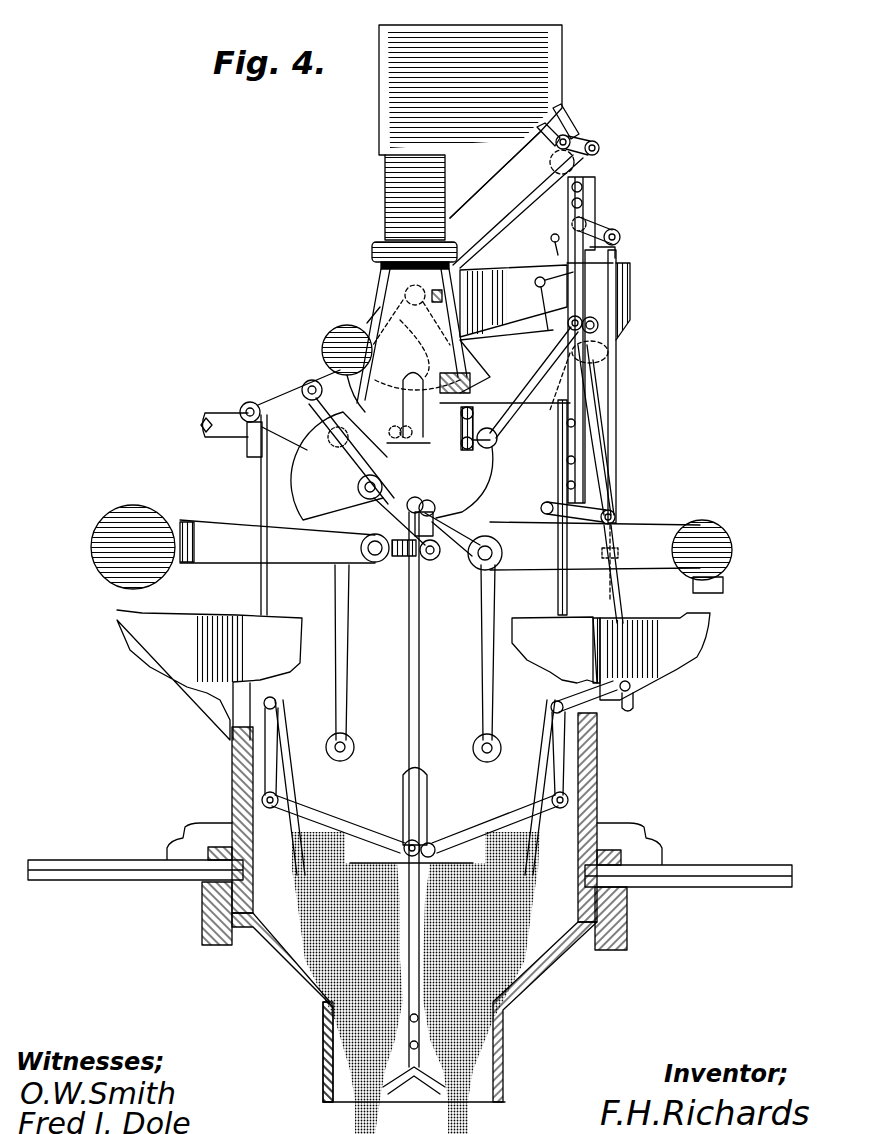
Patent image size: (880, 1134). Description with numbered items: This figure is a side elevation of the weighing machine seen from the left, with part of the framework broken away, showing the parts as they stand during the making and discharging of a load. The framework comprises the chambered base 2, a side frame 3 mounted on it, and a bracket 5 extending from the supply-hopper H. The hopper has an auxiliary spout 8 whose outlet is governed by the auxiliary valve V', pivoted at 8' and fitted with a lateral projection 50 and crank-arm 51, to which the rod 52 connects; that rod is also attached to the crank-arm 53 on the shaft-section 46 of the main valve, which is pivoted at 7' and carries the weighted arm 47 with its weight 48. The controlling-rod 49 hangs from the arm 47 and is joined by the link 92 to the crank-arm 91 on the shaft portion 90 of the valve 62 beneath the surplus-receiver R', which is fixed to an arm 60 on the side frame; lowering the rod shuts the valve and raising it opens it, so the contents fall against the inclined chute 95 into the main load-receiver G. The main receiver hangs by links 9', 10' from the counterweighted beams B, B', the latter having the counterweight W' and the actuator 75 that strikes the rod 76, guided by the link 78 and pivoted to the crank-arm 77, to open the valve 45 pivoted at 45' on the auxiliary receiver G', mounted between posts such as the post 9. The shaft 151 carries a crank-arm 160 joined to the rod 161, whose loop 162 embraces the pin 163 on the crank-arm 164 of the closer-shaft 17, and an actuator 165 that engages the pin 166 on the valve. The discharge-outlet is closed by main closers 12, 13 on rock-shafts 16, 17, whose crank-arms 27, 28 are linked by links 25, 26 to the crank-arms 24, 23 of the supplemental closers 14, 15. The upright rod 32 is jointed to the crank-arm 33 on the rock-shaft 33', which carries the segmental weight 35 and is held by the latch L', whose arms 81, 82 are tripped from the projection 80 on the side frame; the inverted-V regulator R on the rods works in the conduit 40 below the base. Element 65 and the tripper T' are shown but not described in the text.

The supply-hopper H is at (470, 121).
The bracket 5 is at (388, 178).
The rod 52 is at (522, 190).
The auxiliary spout 8 is at (571, 112).
The pivot of auxiliary valve 8' is at (543, 130).
The lateral projection 50 is at (572, 140).
The crank-arm 51 is at (600, 146).
The auxiliary valve V' is at (547, 162).
The auxiliary load-receiver G' is at (589, 393).
The pivot 65 is at (585, 222).
The pivot of valve 45' is at (625, 208).
The crank-arm 77 is at (606, 236).
The valve 45 is at (629, 231).
The pin 166 is at (616, 249).
The actuator 165 is at (551, 239).
The shaft 151 is at (614, 263).
The rod 76 is at (619, 282).
The surplus-receiver R' is at (636, 301).
The crank-arm 91 is at (580, 318).
The projecting shaft portion 90 is at (599, 324).
The link 92 is at (534, 382).
The valve 62 is at (605, 345).
The post 9 is at (605, 484).
The rod 161 is at (606, 414).
The inclined chute 95 is at (552, 405).
The guide-link 78 is at (590, 510).
The actuator 75 is at (620, 553).
The counterweighted beam B' is at (595, 536).
The counterweight W' is at (704, 548).
The crank-arm 33 is at (463, 536).
The counterweighted beam B is at (265, 547).
The link 9' is at (348, 663).
The link 10' is at (476, 663).
The upright connector rod 32 is at (408, 672).
The main load-receiver G is at (436, 617).
The closer-retarding regulator R is at (414, 1083).
The controlling-rod 49 is at (413, 507).
The tongue T' is at (408, 425).
The latch L' is at (456, 428).
The latch arm 81 is at (462, 450).
The latch arm 82 is at (478, 468).
The side frame 3 is at (348, 441).
The pivot of main valve 7' is at (412, 322).
The crank-arm 53 is at (435, 352).
The lateral projection 46 is at (410, 295).
The weighted arm 47 is at (370, 318).
The weight 48 is at (340, 328).
The segmental weight 35 is at (298, 466).
The projection 80 is at (372, 458).
The rock-shaft 33' is at (369, 510).
The base 2 is at (232, 770).
The main closer 13 is at (540, 858).
The main closer 12 is at (290, 855).
The conduit 40 is at (323, 1048).
The supplemental closer 14 is at (385, 860).
The supplemental closer 15 is at (436, 860).
The link 25 is at (322, 815).
The link 26 is at (488, 822).
The crank-arm 23 is at (427, 810).
The crank-arm 24 is at (403, 806).
The rock-shaft 16 is at (278, 700).
The crank-arm 27 is at (280, 747).
The rock-shaft 17 is at (551, 706).
The crank-arm 28 is at (552, 737).
The crank-arm 164 is at (583, 690).
The pin 163 is at (630, 683).
The loop 162 is at (640, 710).
The arm 60 is at (493, 280).
The crank-arm 160 is at (553, 276).